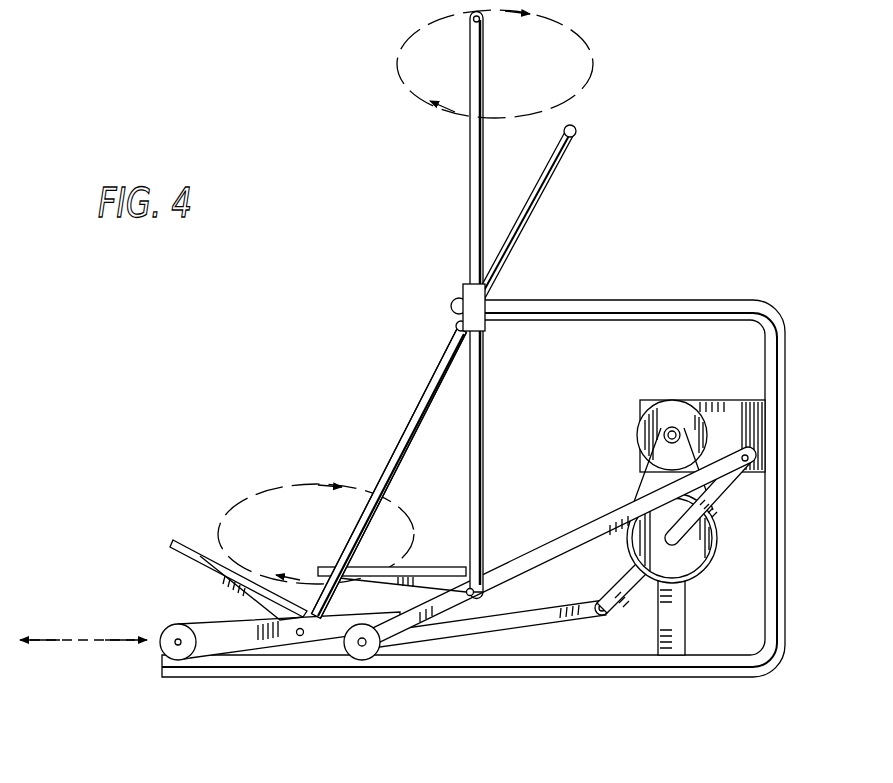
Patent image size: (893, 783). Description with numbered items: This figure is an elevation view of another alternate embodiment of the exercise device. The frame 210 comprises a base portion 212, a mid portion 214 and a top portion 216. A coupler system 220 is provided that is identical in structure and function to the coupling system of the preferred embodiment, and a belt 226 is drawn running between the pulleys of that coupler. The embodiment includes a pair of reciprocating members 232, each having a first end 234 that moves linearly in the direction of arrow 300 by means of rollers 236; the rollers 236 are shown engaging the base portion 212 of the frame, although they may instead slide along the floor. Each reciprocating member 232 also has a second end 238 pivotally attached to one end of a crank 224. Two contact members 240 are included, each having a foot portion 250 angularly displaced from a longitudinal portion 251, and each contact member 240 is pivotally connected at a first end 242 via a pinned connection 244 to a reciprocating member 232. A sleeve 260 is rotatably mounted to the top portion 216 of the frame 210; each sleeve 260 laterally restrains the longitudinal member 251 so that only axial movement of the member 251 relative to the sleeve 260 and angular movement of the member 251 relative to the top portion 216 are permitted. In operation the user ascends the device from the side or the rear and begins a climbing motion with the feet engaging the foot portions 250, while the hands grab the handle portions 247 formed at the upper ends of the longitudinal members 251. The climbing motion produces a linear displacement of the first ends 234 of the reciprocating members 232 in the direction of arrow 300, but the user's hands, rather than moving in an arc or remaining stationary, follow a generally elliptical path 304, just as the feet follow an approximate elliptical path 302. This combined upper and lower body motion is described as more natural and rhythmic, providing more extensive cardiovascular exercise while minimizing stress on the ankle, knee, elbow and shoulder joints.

The frame 210 is at (510, 488).
The base portion 212 is at (534, 677).
The mid portion 214 is at (786, 553).
The top portion 216 is at (658, 300).
The coupler system 220 is at (722, 566).
The crank 224 is at (720, 497).
The belt 226 is at (636, 504).
The reciprocating member 232 is at (274, 645).
The first end 234 is at (200, 640).
The roller 236 is at (170, 646).
The second end 238 is at (735, 453).
The contact member 240 is at (410, 412).
The first end 242 is at (285, 603).
The pinned connection 244 is at (303, 637).
The handle portion 247 is at (472, 22).
The foot portion 250 is at (240, 560).
The longitudinal portion 251 is at (470, 173).
The sleeve 260 is at (468, 290).
The arrow 300 is at (58, 638).
The elliptical path 302 is at (326, 483).
The elliptical path 304 is at (592, 63).